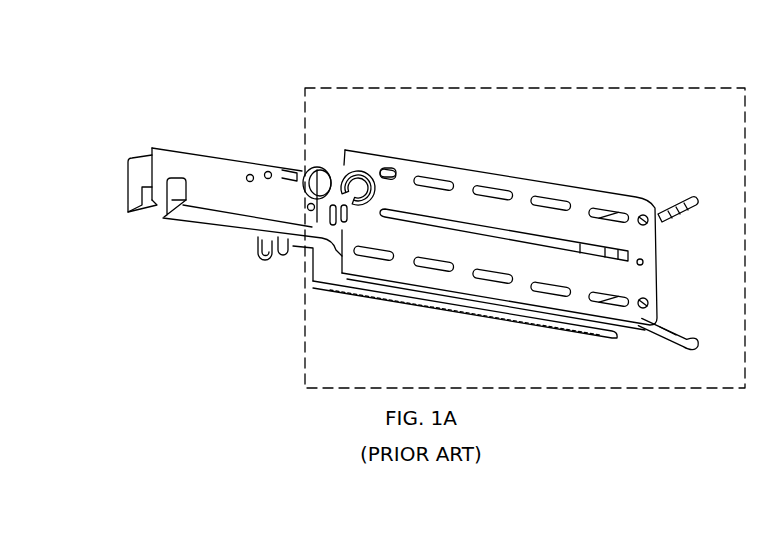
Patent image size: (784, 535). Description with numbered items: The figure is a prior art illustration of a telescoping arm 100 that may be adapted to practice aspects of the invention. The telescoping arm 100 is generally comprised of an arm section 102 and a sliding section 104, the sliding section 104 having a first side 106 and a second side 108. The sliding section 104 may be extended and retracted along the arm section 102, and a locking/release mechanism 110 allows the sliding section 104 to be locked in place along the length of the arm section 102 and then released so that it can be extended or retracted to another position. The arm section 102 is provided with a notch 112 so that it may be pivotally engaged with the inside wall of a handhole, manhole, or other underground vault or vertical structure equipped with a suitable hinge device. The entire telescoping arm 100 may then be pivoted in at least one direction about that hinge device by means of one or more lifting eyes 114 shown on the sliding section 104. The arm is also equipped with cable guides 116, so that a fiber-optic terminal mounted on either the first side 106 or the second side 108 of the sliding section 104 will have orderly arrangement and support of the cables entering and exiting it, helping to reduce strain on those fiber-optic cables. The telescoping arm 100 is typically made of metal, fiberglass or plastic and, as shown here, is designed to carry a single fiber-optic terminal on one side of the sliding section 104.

The telescoping arm 100 is at (253, 295).
The arm section 102 is at (153, 148).
The sliding section 104 is at (492, 88).
The first side 106 is at (496, 226).
The second side 108 is at (339, 300).
The locking/release mechanism 110 is at (302, 172).
The notch 112 is at (162, 220).
The lifting eye 114 is at (683, 208).
The cable guide 116 is at (356, 157).